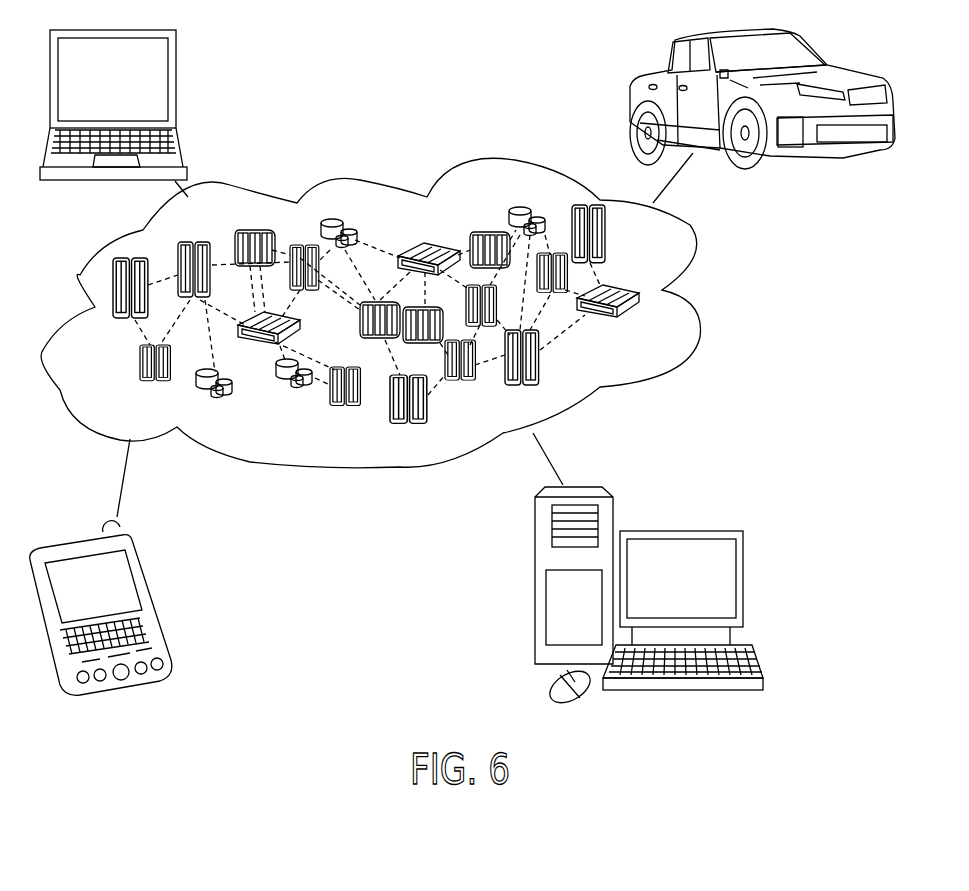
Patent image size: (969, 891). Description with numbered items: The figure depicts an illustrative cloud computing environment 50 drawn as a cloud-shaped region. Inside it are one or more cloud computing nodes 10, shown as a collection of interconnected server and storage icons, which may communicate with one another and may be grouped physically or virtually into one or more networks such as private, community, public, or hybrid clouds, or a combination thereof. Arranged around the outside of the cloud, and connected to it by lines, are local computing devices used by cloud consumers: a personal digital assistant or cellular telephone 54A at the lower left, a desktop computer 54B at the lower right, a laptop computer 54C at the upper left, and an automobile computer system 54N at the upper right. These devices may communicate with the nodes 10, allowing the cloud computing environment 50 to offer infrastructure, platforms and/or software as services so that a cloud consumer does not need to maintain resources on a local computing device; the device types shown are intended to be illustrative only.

The cloud computing nodes 10 is at (650, 340).
The cloud computing environment 50 is at (698, 245).
The personal digital assistant (PDA) or cellular telephone 54A is at (147, 578).
The desktop computer 54B is at (745, 578).
The laptop computer 54C is at (177, 86).
The automobile computer system 54N is at (810, 50).